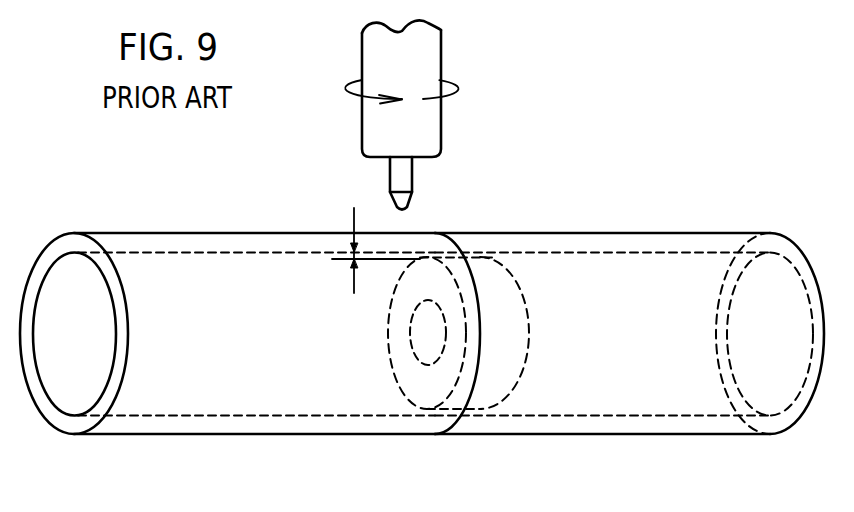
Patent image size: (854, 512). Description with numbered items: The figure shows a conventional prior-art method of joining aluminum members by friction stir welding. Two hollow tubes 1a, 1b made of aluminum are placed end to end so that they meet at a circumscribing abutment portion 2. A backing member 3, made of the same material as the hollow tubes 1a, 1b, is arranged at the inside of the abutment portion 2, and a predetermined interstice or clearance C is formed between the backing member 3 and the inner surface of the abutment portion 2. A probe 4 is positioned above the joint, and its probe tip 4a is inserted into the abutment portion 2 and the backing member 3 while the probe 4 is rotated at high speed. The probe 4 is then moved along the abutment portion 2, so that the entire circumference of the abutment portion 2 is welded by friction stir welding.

The hollow tube 1a is at (293, 395).
The hollow tube 1b is at (572, 390).
The abutment portion 2 is at (480, 328).
The backing member 3 is at (388, 332).
The probe 4 is at (378, 62).
The probe tip 4a is at (407, 203).
The clearance C is at (376, 238).